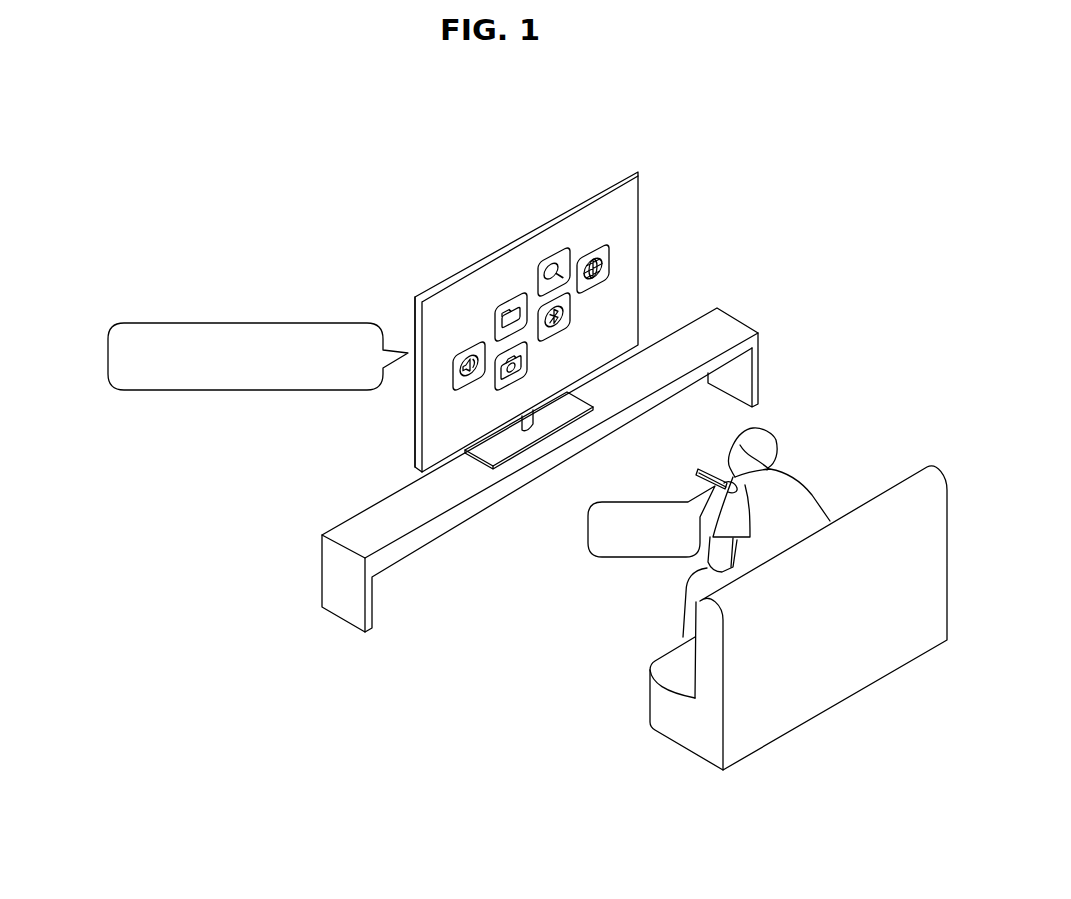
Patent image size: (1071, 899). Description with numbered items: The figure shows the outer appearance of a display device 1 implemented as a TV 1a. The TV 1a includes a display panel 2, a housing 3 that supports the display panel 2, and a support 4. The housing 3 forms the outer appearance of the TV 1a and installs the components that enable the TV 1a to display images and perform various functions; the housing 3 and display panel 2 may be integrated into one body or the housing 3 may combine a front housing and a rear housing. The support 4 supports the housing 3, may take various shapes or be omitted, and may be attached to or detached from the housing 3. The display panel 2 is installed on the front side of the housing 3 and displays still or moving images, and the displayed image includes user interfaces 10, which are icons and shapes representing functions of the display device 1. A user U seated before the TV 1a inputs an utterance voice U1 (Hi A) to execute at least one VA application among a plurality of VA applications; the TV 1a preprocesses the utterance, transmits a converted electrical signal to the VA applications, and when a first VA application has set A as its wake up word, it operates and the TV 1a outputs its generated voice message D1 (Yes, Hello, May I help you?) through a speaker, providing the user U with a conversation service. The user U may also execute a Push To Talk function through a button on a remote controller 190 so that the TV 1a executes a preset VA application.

The display device 1 is at (352, 152).
The TV 1a is at (629, 163).
The display panel 2 is at (627, 253).
The housing 3 is at (638, 213).
The support 4 is at (577, 410).
The user interfaces 10 is at (463, 352).
The remote controller 190 is at (705, 467).
The user U is at (777, 441).
The utterance voice U1 is at (588, 538).
The voice message D1 is at (108, 357).